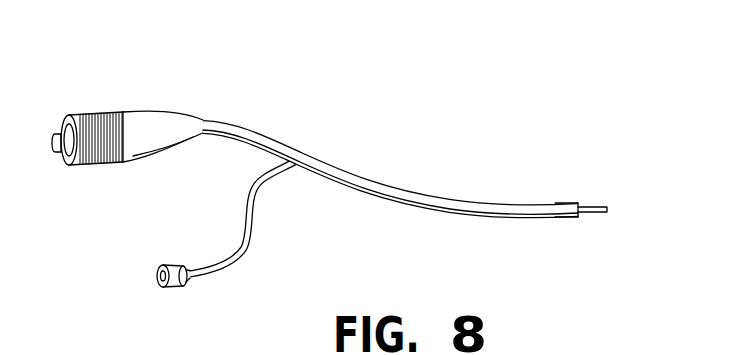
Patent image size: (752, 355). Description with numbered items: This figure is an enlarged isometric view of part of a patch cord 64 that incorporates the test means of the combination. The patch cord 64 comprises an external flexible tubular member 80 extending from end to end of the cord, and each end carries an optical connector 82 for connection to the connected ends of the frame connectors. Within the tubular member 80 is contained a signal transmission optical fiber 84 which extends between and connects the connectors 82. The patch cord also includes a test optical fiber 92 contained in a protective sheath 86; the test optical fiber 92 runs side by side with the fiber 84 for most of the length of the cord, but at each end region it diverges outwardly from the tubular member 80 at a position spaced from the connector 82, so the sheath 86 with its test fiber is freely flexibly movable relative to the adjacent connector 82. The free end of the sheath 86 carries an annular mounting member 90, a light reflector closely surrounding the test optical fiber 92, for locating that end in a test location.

The patch cord 64 is at (499, 194).
The external flexible tubular member 80 is at (450, 198).
The optical connector 82 is at (160, 122).
The signal transmission optical fiber 84 is at (597, 207).
The protective sheath 86 is at (256, 243).
The annular mounting member 90 is at (182, 287).
The test optical fiber 92 is at (543, 218).